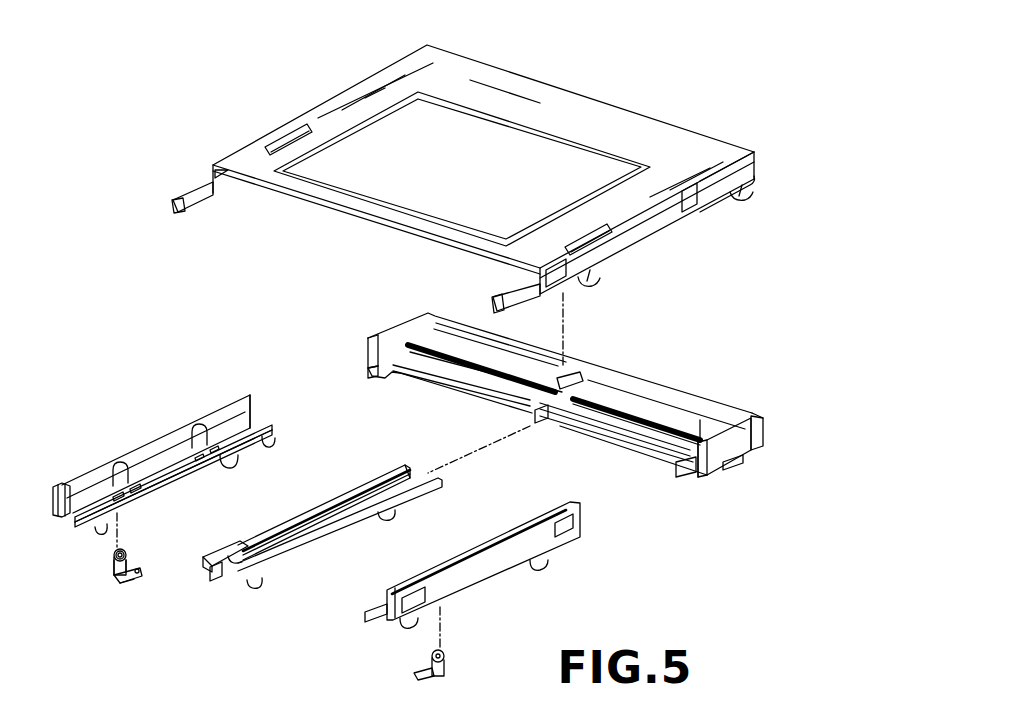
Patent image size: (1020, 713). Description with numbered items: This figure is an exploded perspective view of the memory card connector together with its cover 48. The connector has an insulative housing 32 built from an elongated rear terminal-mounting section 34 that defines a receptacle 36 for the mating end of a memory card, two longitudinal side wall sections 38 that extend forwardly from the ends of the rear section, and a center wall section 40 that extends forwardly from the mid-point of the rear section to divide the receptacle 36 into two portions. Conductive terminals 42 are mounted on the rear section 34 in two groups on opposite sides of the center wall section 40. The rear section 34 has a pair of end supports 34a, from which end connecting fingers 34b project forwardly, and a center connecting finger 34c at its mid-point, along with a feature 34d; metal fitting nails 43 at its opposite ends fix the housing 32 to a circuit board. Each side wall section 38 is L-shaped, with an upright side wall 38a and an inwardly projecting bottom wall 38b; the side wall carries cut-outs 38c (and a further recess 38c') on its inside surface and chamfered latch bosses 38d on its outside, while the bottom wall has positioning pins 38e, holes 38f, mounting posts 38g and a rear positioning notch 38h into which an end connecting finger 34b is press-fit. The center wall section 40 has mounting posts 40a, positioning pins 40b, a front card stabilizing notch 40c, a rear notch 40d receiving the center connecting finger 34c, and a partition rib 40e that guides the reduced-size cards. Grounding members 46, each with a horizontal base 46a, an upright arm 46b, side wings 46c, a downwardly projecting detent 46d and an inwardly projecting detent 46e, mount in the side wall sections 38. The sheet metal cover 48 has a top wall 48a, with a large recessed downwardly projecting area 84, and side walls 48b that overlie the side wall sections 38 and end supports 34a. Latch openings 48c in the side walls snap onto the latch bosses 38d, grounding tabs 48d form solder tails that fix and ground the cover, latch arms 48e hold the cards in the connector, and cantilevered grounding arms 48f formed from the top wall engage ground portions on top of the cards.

The insulative housing 32 is at (683, 378).
The rear terminal-mounting section 34 is at (548, 352).
The end supports 34a is at (710, 465).
The end connecting fingers 34b is at (686, 472).
The center connecting finger 34c is at (548, 422).
The housing projection 34d is at (572, 380).
The receptacle 36 is at (663, 438).
The side wall sections 38 is at (155, 428).
The upright side wall 38a is at (222, 418).
The bottom wall 38b is at (167, 473).
The cut-outs 38c is at (137, 446).
The guide rail end hook 38c' is at (45, 479).
The chamfered latch bosses 38d is at (567, 525).
The positioning pins 38e is at (265, 443).
The holes 38f is at (115, 499).
The mounting posts 38g is at (233, 465).
The rear positioning notch 38h is at (255, 418).
The center wall section 40 is at (360, 485).
The mounting posts 40a is at (256, 583).
The positioning pins 40b is at (218, 575).
The front card stabilizing notch 40c is at (226, 556).
The rear notch 40d is at (420, 472).
The partition rib 40e is at (290, 530).
The conductive terminals 42 is at (443, 358).
The fitting nails 43 is at (734, 470).
The grounding members 46 is at (100, 562).
The base 46a is at (142, 574).
The upright arm 46b is at (127, 562).
The side wings 46c is at (113, 580).
The downwardly projecting detent 46d is at (127, 587).
The inwardly projecting detent 46e is at (113, 555).
The cover 48 is at (595, 85).
The top wall 48a is at (535, 102).
The side walls 48b is at (757, 153).
The latch openings 48c is at (550, 267).
The grounding tabs 48d is at (588, 285).
The latch arms 48e is at (203, 186).
The cantilevered grounding arms 48f is at (284, 140).
The recessed downwardly projecting area 84 is at (457, 100).